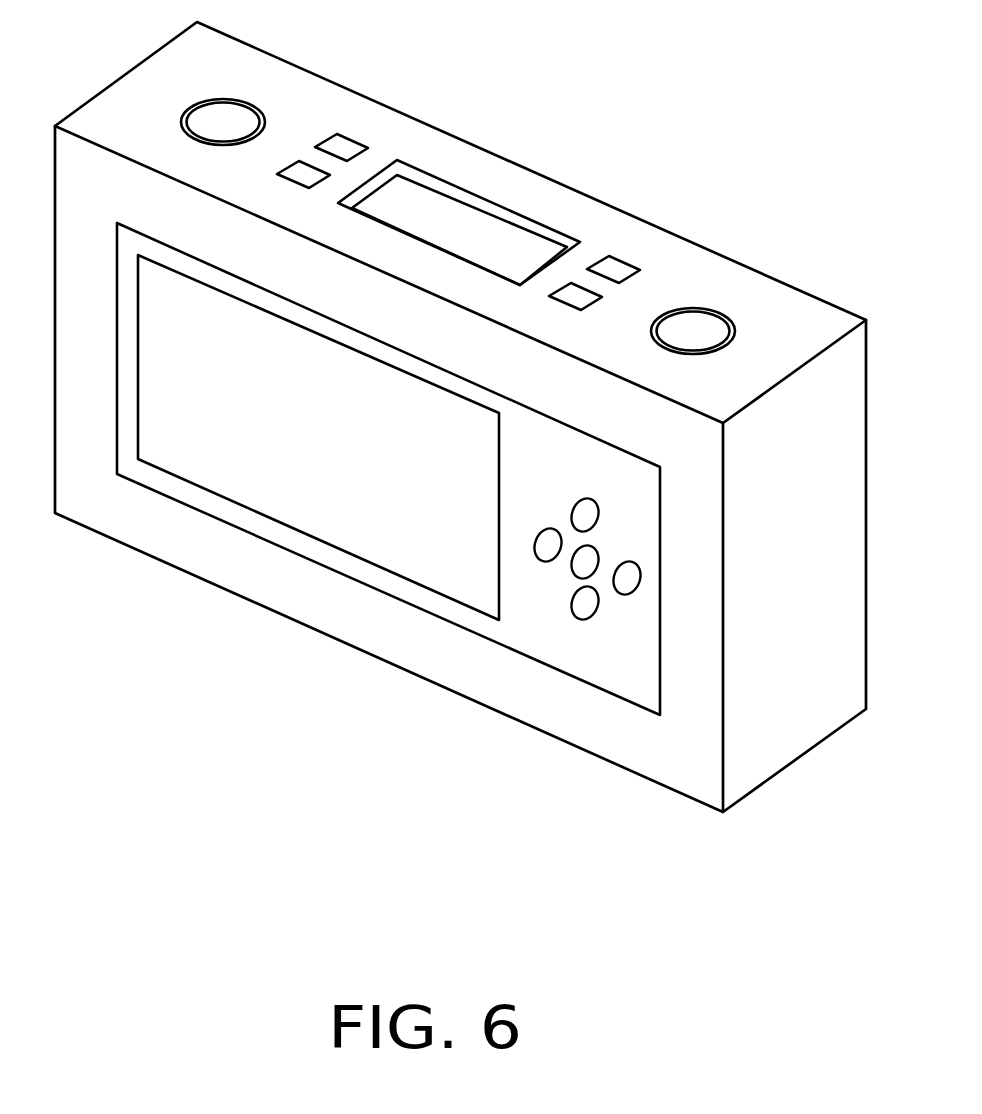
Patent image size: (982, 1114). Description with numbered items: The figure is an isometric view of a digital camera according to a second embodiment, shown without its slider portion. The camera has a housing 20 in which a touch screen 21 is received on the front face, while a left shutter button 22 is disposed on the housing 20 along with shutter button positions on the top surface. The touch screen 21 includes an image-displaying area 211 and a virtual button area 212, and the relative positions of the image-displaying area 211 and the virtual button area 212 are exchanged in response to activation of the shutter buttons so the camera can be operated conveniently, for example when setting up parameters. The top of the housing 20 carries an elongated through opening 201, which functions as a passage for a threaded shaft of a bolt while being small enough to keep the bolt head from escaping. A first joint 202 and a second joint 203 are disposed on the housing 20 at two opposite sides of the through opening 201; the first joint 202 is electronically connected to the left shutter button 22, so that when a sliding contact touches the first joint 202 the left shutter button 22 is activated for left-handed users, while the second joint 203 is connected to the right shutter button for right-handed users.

The housing 20 is at (780, 683).
The touch screen 21 is at (473, 796).
The image-displaying area 211 is at (423, 542).
The virtual button area 212 is at (570, 633).
The elongated through opening 201 is at (428, 210).
The first joint 202 is at (335, 145).
The second joint 203 is at (612, 265).
The left shutter button 22 is at (221, 117).